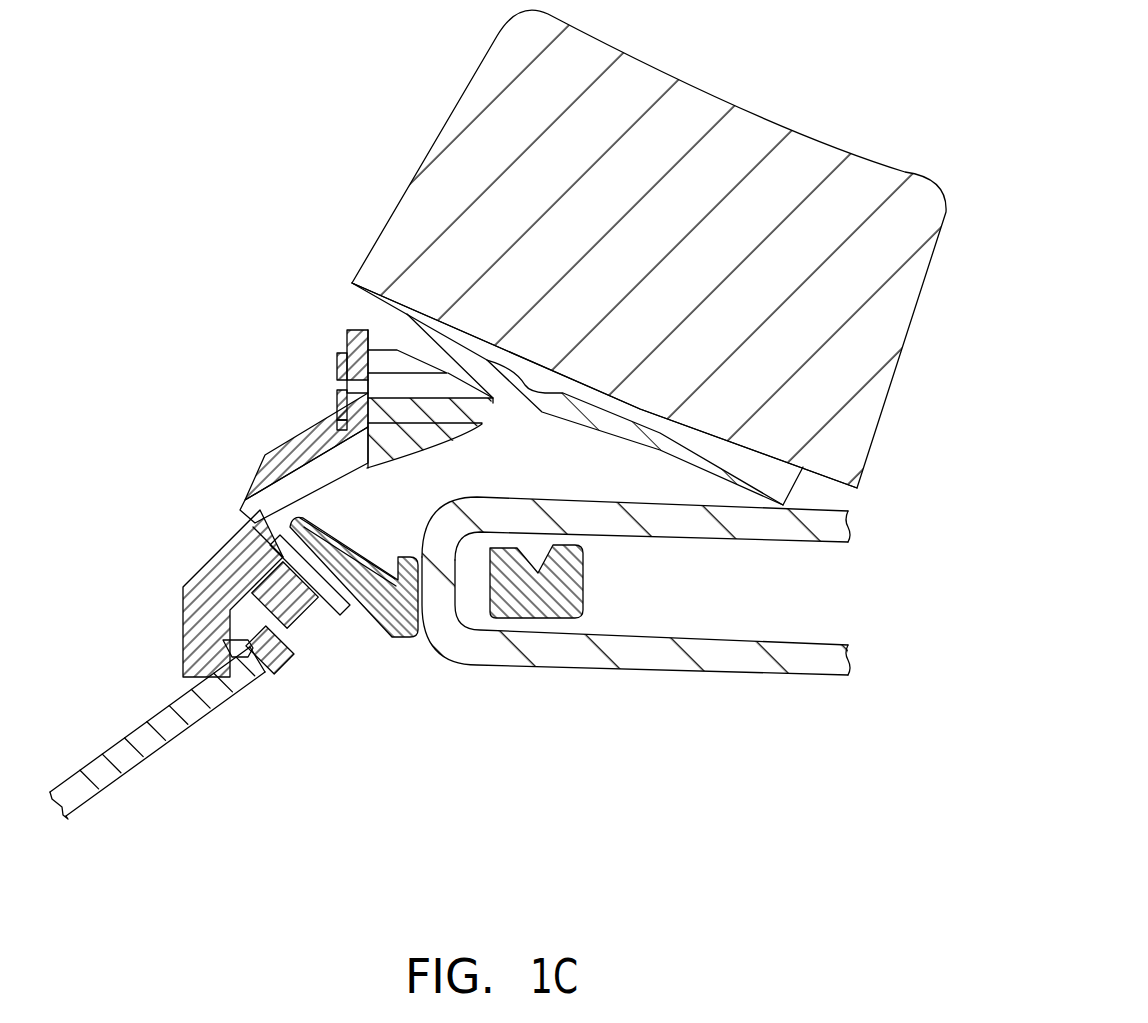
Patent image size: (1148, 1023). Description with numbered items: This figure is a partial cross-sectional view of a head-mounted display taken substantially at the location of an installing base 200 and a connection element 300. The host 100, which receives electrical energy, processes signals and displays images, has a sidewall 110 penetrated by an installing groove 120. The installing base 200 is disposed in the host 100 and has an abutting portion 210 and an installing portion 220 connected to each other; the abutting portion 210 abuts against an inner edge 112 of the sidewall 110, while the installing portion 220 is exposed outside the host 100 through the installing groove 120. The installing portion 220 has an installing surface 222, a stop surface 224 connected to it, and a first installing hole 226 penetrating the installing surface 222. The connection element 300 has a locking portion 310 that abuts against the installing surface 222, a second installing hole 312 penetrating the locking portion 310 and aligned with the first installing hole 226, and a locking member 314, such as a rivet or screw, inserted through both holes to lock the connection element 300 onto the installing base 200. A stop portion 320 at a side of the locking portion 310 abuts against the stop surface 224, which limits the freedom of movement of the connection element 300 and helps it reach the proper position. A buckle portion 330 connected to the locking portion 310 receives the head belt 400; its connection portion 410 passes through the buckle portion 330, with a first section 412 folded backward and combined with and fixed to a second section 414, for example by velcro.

The host 100 is at (350, 292).
The sidewall 110 is at (483, 450).
The inner edge 112 is at (413, 455).
The installing groove 120 is at (247, 672).
The installing base 200 is at (246, 515).
The abutting portion 210 is at (297, 468).
The installing portion 220 is at (246, 546).
The installing surface 222 is at (250, 654).
The stop surface 224 is at (307, 538).
The first installing hole 226 is at (253, 570).
The connection element 300 is at (441, 635).
The locking portion 310 is at (315, 644).
The second installing hole 312 is at (266, 623).
The locking member 314 is at (288, 627).
The stop portion 320 is at (392, 637).
The buckle portion 330 is at (568, 606).
The head belt 400 is at (666, 587).
The connection portion 410 is at (636, 587).
The first section 412 is at (706, 650).
The second section 414 is at (690, 530).